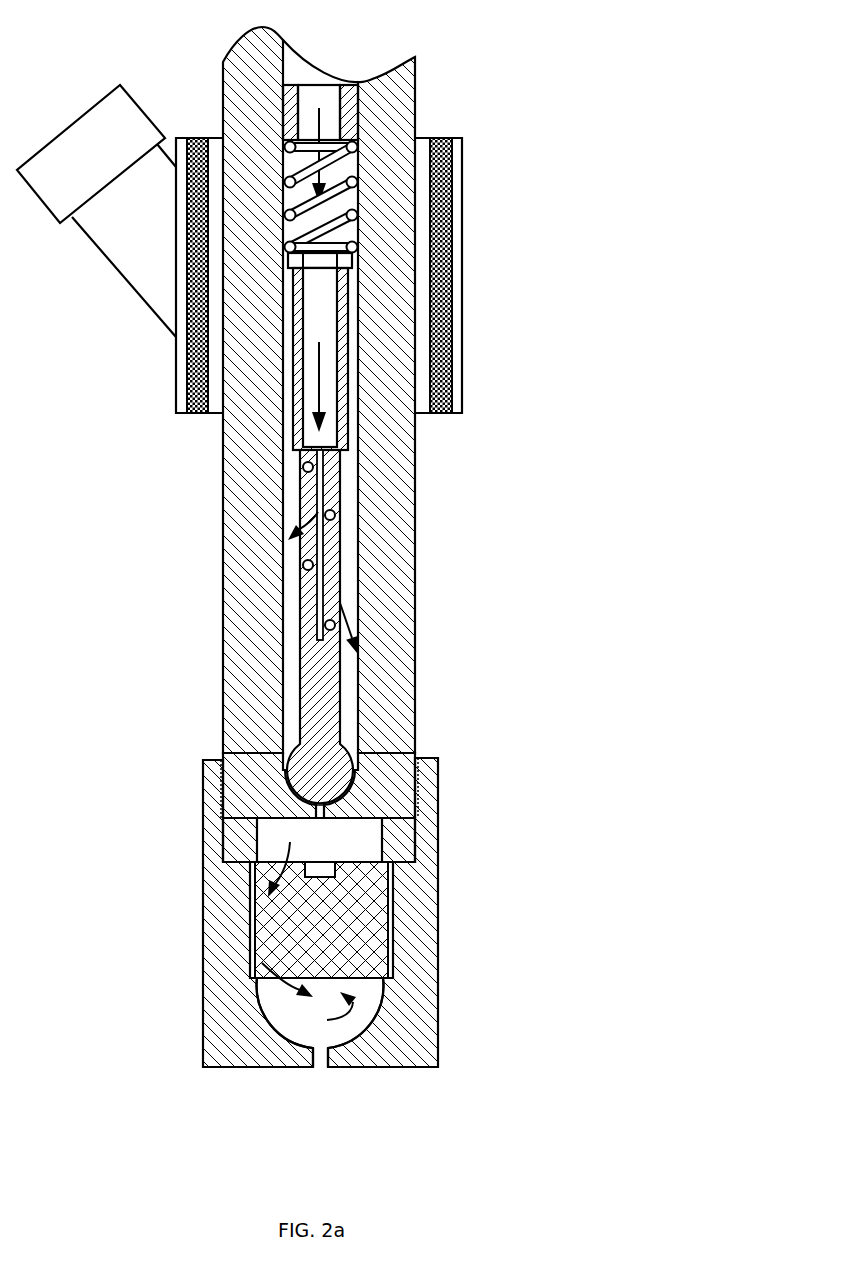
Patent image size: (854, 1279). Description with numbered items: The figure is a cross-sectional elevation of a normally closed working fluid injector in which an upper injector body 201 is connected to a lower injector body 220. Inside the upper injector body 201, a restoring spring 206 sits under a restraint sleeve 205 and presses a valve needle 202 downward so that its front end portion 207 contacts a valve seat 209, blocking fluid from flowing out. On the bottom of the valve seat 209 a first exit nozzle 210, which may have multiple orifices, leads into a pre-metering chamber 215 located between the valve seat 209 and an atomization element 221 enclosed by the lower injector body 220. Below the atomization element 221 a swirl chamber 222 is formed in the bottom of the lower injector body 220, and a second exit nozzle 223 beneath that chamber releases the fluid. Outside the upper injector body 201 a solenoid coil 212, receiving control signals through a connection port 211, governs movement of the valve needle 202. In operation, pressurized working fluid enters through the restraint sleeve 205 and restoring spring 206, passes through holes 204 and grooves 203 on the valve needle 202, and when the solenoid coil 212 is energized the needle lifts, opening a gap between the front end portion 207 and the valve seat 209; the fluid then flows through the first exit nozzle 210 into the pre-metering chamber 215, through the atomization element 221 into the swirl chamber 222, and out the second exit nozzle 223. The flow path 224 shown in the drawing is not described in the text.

The upper injector body 201 is at (415, 505).
The valve needle 202 is at (298, 433).
The grooves 203 is at (320, 628).
The holes 204 is at (308, 565).
The restraint sleeve 205 is at (290, 90).
The restoring spring 206 is at (348, 150).
The front end portion 207 is at (298, 768).
The valve seat 209 is at (267, 800).
The first exit nozzle 210 is at (317, 808).
The connection port 211 is at (120, 122).
The solenoid coil 212 is at (187, 333).
The pre-metering chamber 215 is at (283, 850).
The lower injector body 220 is at (438, 840).
The atomization element 221 is at (378, 948).
The swirl chamber 222 is at (330, 1033).
The second exit nozzle 223 is at (323, 1057).
The flow path 224 is at (273, 973).